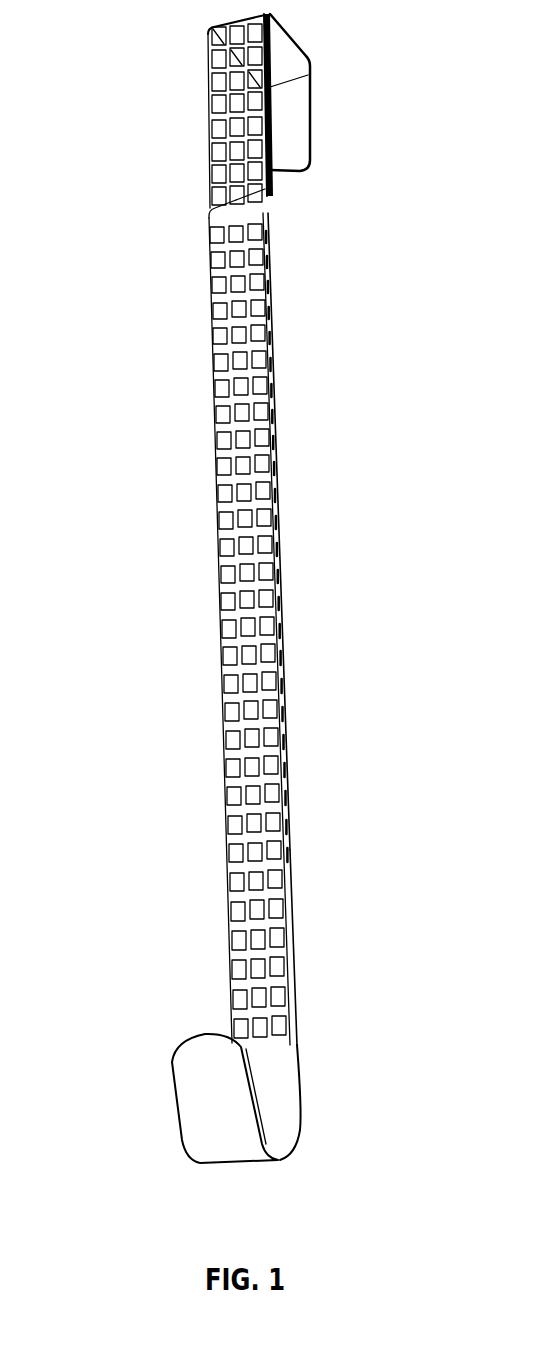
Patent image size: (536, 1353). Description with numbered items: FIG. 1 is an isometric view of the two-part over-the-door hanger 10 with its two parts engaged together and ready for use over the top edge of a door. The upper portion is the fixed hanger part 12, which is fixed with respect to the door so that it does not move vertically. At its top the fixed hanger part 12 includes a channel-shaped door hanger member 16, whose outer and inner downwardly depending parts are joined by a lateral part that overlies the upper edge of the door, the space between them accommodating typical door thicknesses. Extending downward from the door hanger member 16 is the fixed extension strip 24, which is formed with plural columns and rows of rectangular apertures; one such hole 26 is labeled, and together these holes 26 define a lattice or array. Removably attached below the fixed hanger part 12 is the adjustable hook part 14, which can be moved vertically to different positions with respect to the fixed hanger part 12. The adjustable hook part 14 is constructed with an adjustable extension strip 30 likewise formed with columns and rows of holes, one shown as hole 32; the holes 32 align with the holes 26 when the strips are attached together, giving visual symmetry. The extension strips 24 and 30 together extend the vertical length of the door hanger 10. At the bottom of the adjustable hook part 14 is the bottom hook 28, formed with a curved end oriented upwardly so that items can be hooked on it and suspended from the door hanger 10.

The two-part over-the-door hanger 10 is at (320, 305).
The fixed hanger part 12 is at (207, 142).
The adjustable hook part 14 is at (232, 948).
The door hanger member 16 is at (313, 130).
The fixed extension strip 24 is at (207, 189).
The hole 26 is at (268, 197).
The bottom hook 28 is at (161, 1096).
The adjustable extension strip 30 is at (292, 914).
The hole 32 is at (297, 1004).